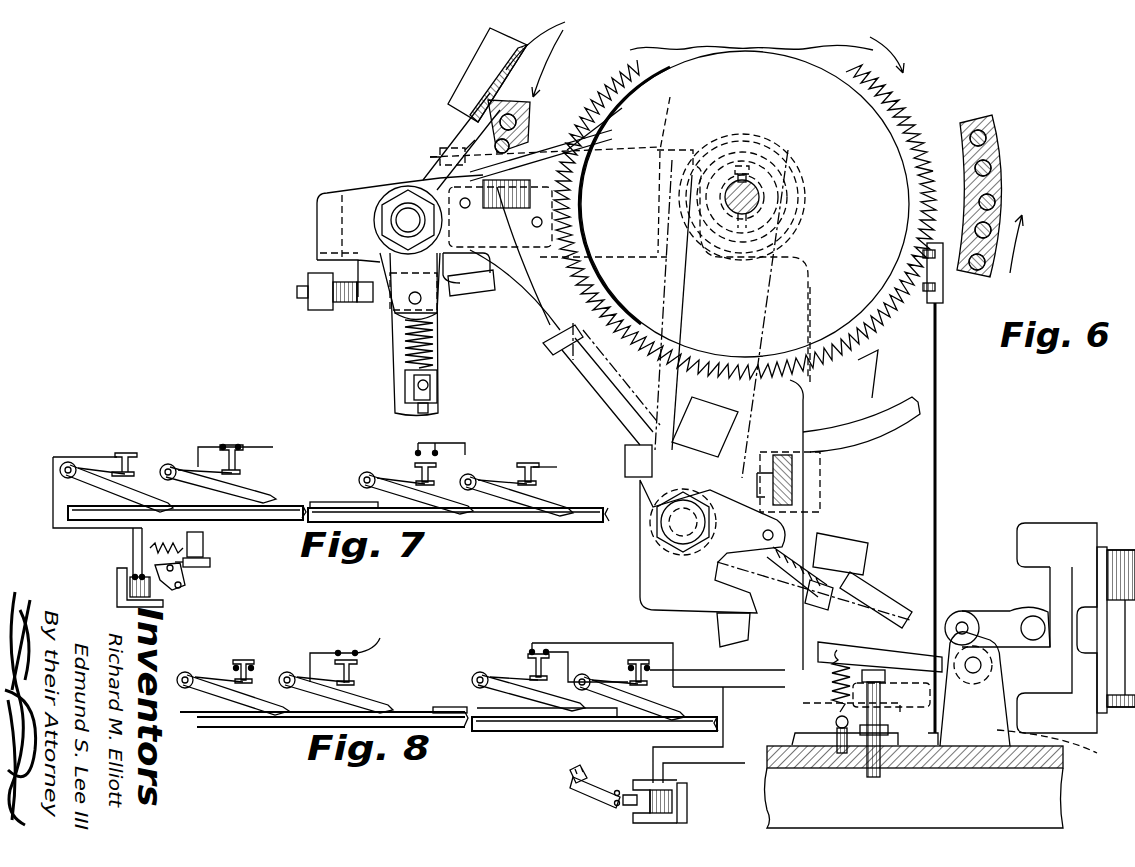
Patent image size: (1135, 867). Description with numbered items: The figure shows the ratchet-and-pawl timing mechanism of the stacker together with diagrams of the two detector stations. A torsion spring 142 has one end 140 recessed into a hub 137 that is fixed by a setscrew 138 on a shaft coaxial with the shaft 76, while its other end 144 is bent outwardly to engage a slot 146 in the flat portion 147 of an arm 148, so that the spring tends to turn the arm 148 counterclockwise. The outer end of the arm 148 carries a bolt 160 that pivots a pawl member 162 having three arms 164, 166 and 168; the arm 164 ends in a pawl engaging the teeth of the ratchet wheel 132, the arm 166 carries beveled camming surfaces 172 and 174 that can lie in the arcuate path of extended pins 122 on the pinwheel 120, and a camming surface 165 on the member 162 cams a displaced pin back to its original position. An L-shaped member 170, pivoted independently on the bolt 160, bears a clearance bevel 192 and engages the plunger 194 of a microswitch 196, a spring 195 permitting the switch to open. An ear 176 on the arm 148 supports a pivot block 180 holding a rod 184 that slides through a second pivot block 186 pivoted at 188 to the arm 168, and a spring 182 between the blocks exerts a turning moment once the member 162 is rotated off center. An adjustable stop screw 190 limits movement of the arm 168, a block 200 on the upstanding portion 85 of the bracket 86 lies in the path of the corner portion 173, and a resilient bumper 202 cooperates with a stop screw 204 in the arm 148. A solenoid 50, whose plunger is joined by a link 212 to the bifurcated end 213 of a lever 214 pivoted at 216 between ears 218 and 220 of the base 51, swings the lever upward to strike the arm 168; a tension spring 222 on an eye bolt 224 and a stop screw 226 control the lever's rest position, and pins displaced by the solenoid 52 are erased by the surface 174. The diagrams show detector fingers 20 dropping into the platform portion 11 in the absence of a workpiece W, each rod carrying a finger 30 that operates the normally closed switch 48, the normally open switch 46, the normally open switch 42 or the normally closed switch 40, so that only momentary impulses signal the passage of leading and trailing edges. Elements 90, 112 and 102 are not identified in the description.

In FIG. 6, the ratchet wheel 132 is at (905, 100).
In FIG. 6, the shaft 76 is at (760, 203).
In FIG. 6, the torsion spring 142 is at (785, 188).
In FIG. 6, the setscrew 138 is at (773, 165).
In FIG. 6, the hub 137 is at (777, 167).
In FIG. 6, the end of torsion spring 140 is at (788, 226).
In FIG. 6, the end of torsion spring 144 is at (668, 150).
In FIG. 6, the slot 146 is at (669, 104).
In FIG. 6, the flat portion 147 is at (658, 196).
In FIG. 6, the microswitch 196 is at (572, 238).
In FIG. 6, the L-shaped member 170 is at (610, 119).
In FIG. 6, the plunger 194 is at (590, 141).
In FIG. 6, the corner portion 173 is at (553, 168).
In FIG. 6, the beveled camming surface 172 is at (495, 33).
In FIG. 6, the beveled camming surface 174 is at (482, 78).
In FIG. 6, the arm 166 is at (478, 62).
In FIG. 6, the beveled surface 192 is at (480, 150).
In FIG. 6, the pinwheel 120 is at (530, 107).
In FIG. 7, the pinwheel 120 is at (203, 540).
In FIG. 6, the pins 122 is at (991, 170).
In FIG. 7, the pins 122 is at (205, 565).
In FIG. 6, the block 200 is at (943, 275).
In FIG. 6, the upstanding portion 85 is at (930, 500).
In FIG. 6, the arm 164 is at (575, 347).
In FIG. 6, the resilient bumper 202 is at (795, 470).
In FIG. 6, the arm 148 is at (357, 195).
In FIG. 6, the bolt 160 is at (407, 215).
In FIG. 6, the adjustable stop screw 190 is at (300, 290).
In FIG. 6, the ear 176 is at (392, 302).
In FIG. 6, the pivot block 180 is at (396, 322).
In FIG. 6, the arm 168 is at (396, 356).
In FIG. 8, the arm 168 is at (584, 772).
In FIG. 6, the spring 182 is at (433, 359).
In FIG. 6, the second pivot block 186 is at (437, 390).
In FIG. 6, the pivot 188 is at (405, 391).
In FIG. 6, the rod 184 is at (428, 410).
In FIG. 6, the spring 195 is at (500, 213).
In FIG. 6, the camming surface 165 is at (498, 205).
In FIG. 6, the pawl member 162 is at (500, 258).
In FIG. 6, the adjustable stop screw 204 is at (470, 290).
In FIG. 6, the lever 214 is at (898, 657).
In FIG. 8, the lever 214 is at (592, 800).
In FIG. 6, the tension spring 222 is at (834, 682).
In FIG. 6, the eye bolt 224 is at (837, 727).
In FIG. 6, the stop screw 226 is at (888, 745).
In FIG. 6, the switch box 90 is at (888, 694).
In FIG. 6, the bracket 86 is at (812, 718).
In FIG. 6, the base 51 is at (1057, 789).
In FIG. 6, the ear 218 is at (975, 740).
In FIG. 6, the bifurcated end portion 213 is at (960, 618).
In FIG. 6, the pivot 216 is at (970, 673).
In FIG. 6, the link 212 is at (995, 615).
In FIG. 6, the ear 220 is at (1065, 750).
In FIG. 7, the platform portion 11 is at (520, 521).
In FIG. 8, the platform portion 11 is at (532, 726).
In FIG. 7, the workpiece W is at (330, 503).
In FIG. 8, the workpiece W is at (460, 705).
In FIG. 7, the detector fingers 20 is at (150, 503).
In FIG. 8, the detector fingers 20 is at (270, 706).
In FIG. 7, the finger 30 is at (95, 468).
In FIG. 8, the finger 30 is at (225, 680).
In FIG. 7, the normally closed switch 48 is at (126, 452).
In FIG. 8, the normally closed switch 48 is at (250, 660).
In FIG. 7, the normally open switch 46 is at (240, 462).
In FIG. 8, the normally open switch 46 is at (345, 656).
In FIG. 7, the normally open switch 42 is at (455, 455).
In FIG. 8, the normally open switch 42 is at (530, 652).
In FIG. 7, the normally closed switch 40 is at (533, 463).
In FIG. 8, the normally closed switch 40 is at (640, 660).
In FIG. 7, the solenoid 52 is at (128, 580).
In FIG. 7, the spring 112 is at (163, 557).
In FIG. 7, the switch lever 102 is at (182, 590).
In FIG. 8, the solenoid 50 is at (645, 817).